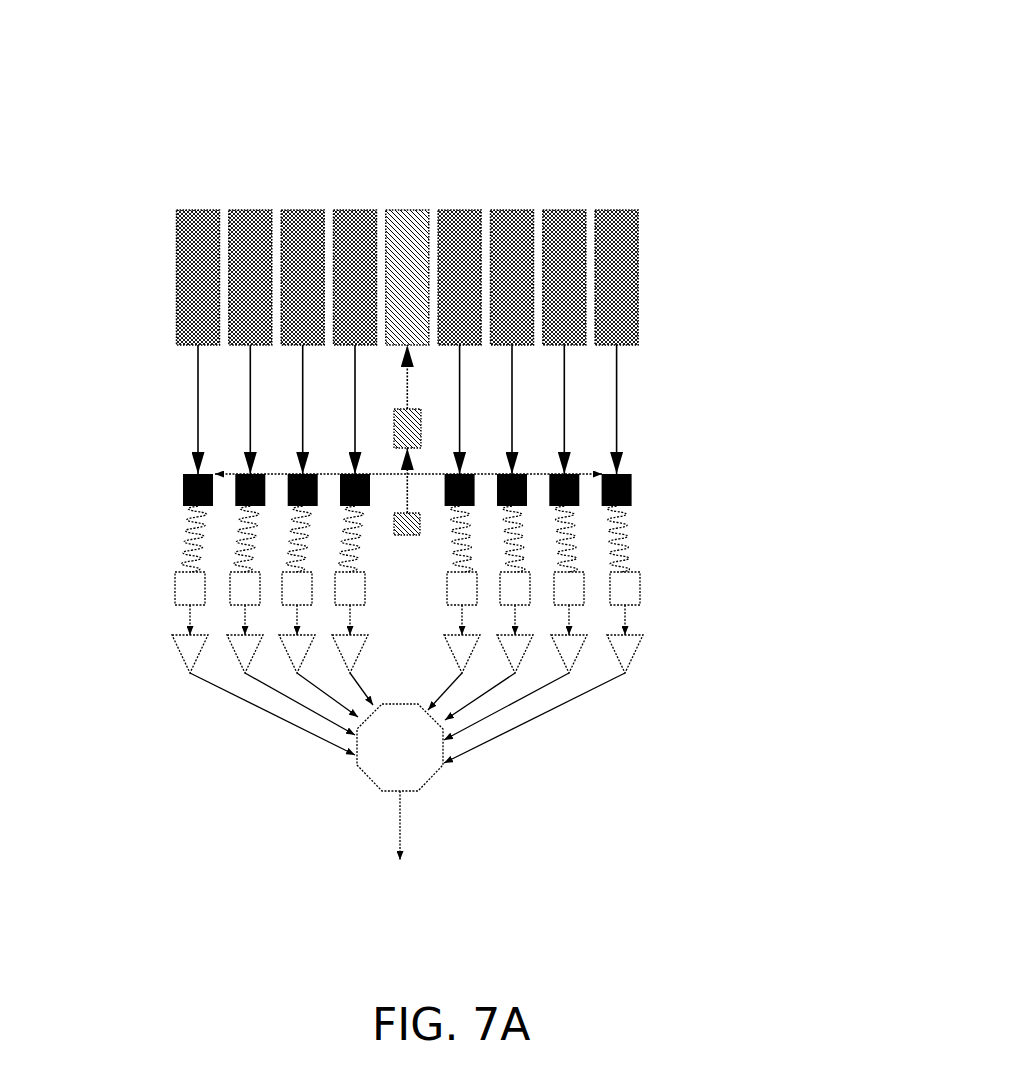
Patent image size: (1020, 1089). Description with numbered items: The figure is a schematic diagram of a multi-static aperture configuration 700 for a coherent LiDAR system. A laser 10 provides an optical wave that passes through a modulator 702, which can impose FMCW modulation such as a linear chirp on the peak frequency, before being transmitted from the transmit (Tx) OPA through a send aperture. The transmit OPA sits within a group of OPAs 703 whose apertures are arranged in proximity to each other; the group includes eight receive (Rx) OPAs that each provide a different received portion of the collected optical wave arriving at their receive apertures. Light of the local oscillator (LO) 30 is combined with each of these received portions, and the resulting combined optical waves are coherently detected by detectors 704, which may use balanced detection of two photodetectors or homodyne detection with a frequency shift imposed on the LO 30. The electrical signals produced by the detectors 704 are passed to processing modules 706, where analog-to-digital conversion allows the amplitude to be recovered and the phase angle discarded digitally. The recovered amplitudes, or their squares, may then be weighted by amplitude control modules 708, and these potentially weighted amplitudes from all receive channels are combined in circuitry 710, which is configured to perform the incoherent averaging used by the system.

The LIDAR system 700 is at (335, 114).
The modulator 702 is at (392, 417).
The group of OPAs 703 is at (466, 264).
The detectors 704 is at (634, 490).
The processing modules 706 is at (645, 588).
The amplitude control modules 708 is at (160, 652).
The circuitry 710 is at (380, 760).
The local oscillator (LO) 30 is at (272, 472).
The laser 10 is at (420, 554).